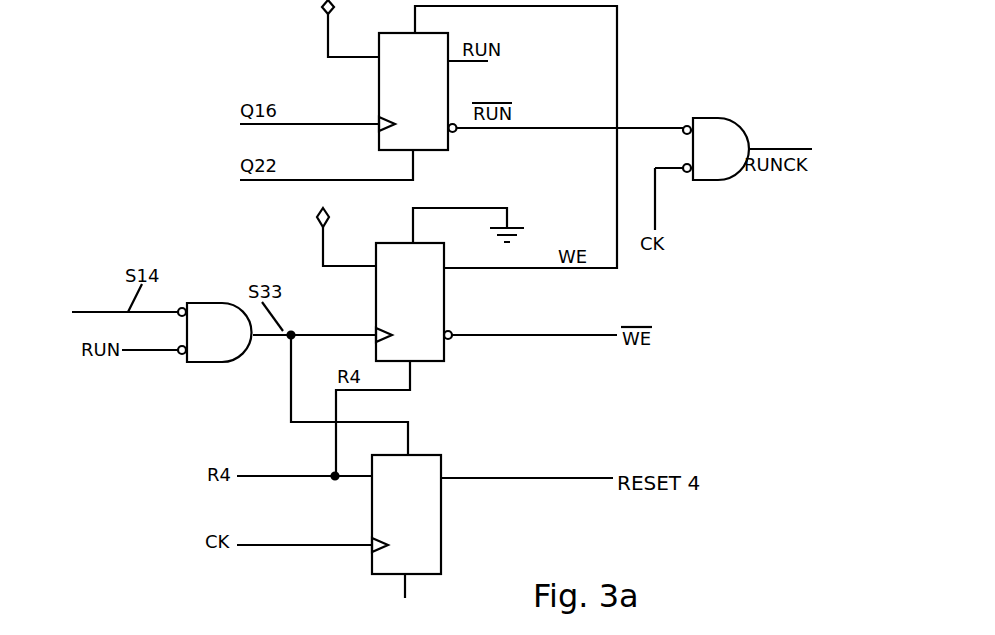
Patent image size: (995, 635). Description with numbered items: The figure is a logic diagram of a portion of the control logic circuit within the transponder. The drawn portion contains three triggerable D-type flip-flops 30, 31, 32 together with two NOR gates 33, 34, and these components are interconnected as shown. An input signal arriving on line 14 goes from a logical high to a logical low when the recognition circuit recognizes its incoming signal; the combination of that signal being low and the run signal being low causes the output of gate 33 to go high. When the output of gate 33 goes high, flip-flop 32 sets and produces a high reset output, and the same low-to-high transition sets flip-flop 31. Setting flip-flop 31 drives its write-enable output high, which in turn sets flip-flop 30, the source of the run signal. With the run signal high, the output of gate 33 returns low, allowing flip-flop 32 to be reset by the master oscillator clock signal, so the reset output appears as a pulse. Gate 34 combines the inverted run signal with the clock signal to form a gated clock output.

The input line from element 14 is at (86, 312).
The flip-flop 30 is at (379, 88).
The flip-flop 31 is at (376, 293).
The flip-flop 32 is at (372, 505).
The NOR gate 33 is at (213, 303).
The NOR gate 34 is at (716, 118).